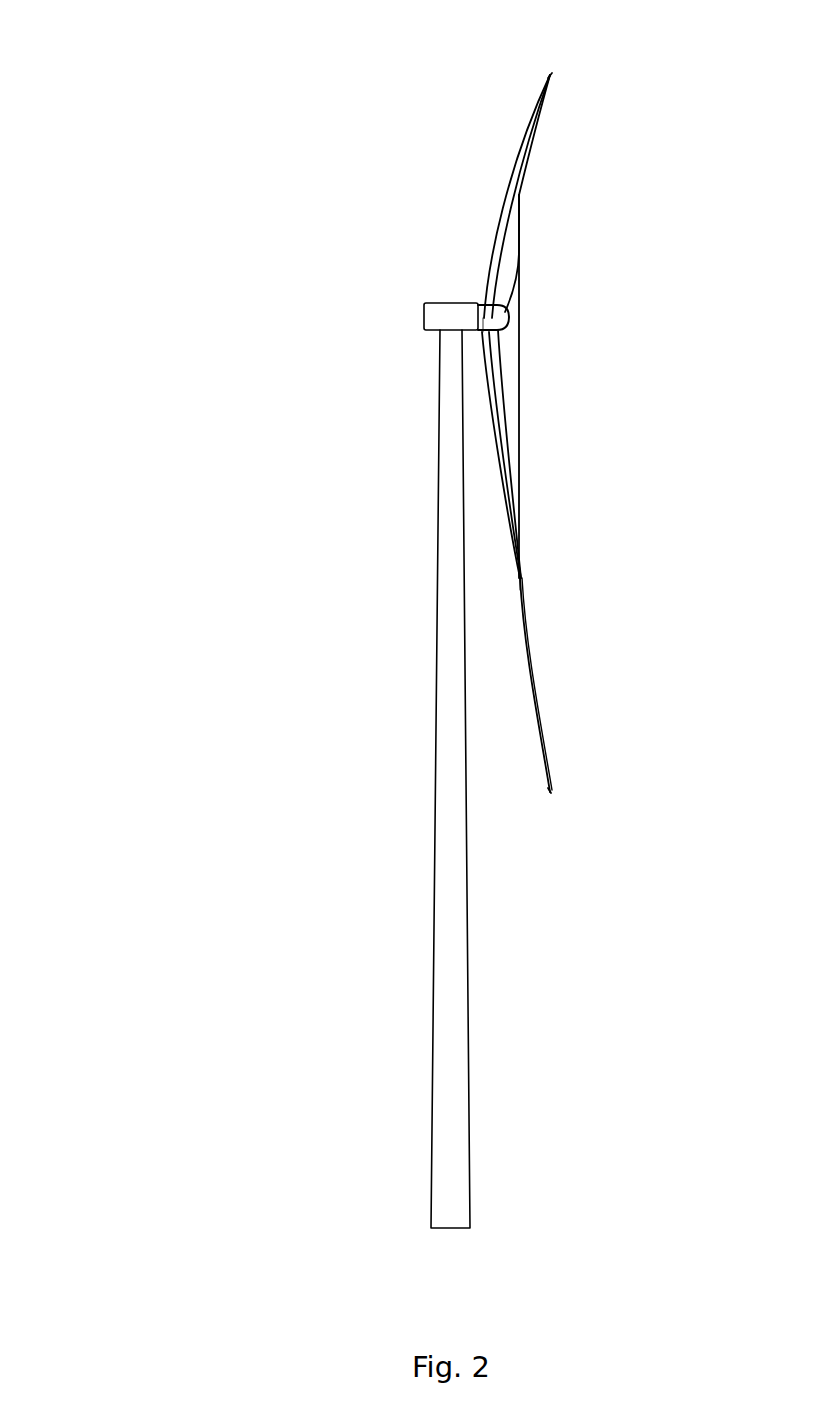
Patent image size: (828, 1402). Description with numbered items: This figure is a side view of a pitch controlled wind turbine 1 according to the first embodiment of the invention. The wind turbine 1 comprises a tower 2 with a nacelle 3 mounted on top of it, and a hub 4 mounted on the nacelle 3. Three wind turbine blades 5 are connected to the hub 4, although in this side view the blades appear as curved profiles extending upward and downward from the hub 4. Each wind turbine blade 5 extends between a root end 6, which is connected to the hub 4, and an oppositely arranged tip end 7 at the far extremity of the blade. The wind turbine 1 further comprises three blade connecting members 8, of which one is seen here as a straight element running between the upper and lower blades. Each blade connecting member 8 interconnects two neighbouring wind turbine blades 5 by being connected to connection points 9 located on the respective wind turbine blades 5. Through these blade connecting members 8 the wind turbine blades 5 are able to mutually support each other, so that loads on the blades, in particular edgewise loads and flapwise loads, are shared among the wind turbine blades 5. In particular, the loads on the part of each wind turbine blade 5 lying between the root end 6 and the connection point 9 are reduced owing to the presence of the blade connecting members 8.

The wind turbine 1 is at (218, 210).
The tower 2 is at (445, 972).
The nacelle 3 is at (444, 304).
The hub 4 is at (505, 315).
The wind turbine blade 5 is at (524, 148).
The root end 6 is at (483, 313).
The tip end 7 is at (553, 73).
The blade connecting member 8 is at (522, 380).
The connection point 9 is at (521, 195).